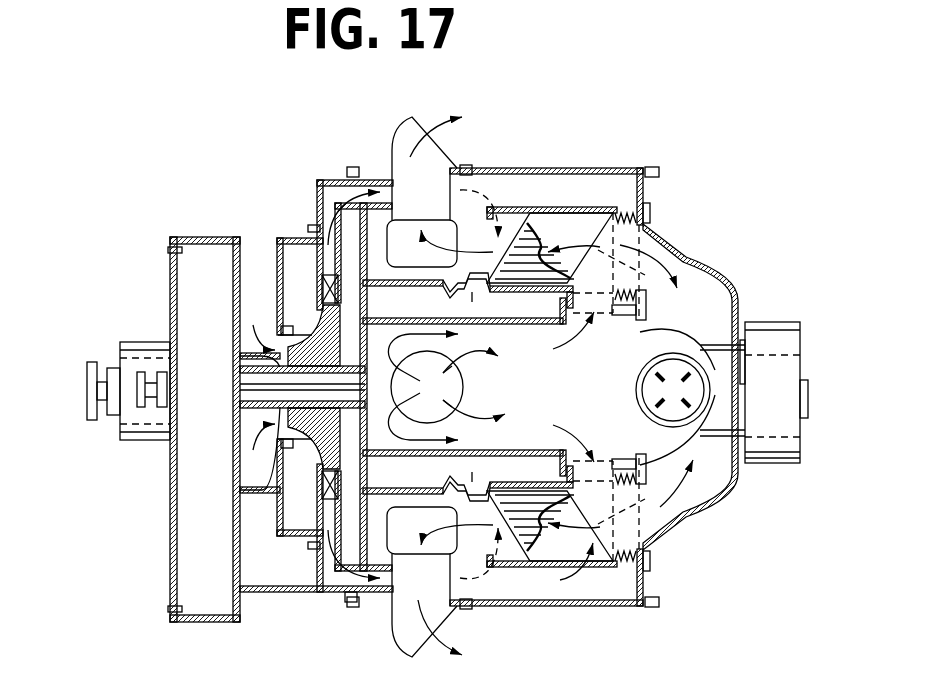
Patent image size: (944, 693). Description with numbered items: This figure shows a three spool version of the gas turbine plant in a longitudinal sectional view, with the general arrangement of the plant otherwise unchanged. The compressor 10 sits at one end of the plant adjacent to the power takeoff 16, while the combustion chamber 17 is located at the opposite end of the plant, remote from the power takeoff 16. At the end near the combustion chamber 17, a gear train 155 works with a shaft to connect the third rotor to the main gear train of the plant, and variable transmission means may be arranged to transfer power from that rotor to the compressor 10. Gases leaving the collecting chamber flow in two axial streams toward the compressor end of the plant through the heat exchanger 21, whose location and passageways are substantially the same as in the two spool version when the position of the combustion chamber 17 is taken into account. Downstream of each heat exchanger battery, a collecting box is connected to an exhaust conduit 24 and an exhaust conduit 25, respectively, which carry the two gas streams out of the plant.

The power takeoff 16 is at (110, 366).
The compressor 10 is at (318, 358).
The exhaust conduit 24 is at (418, 142).
The exhaust conduit 25 is at (414, 632).
The heat exchanger 21 is at (563, 222).
The combustion chamber 17 is at (673, 352).
The gear train 155 is at (770, 324).